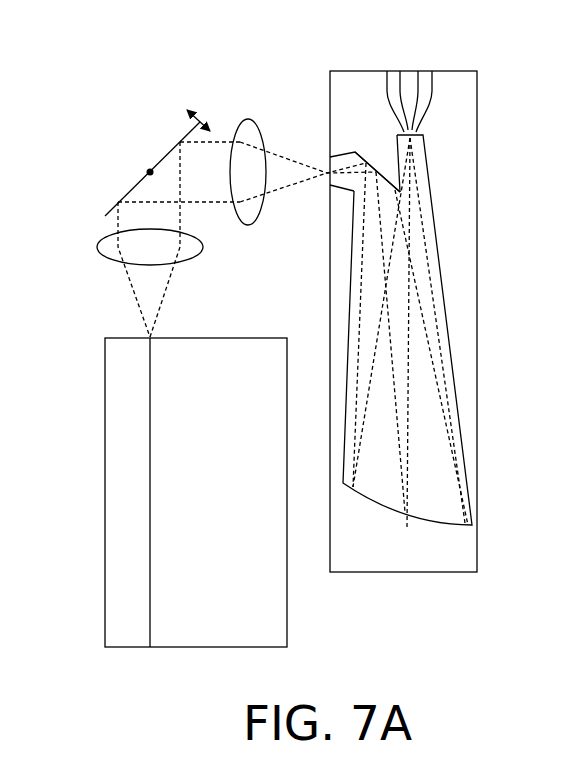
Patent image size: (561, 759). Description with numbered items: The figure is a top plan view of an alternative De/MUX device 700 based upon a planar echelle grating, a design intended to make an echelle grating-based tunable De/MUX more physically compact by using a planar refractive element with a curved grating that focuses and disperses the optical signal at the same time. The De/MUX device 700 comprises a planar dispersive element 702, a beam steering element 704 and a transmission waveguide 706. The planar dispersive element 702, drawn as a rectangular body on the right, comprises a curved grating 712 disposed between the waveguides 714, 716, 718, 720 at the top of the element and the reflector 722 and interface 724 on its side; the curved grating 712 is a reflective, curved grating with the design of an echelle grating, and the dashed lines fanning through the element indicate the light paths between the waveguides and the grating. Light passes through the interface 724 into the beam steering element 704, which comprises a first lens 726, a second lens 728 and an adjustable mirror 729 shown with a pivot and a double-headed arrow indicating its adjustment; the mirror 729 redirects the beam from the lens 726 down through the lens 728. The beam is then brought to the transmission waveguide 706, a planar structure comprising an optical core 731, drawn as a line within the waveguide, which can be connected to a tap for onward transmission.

The De/MUX device 700 is at (401, 616).
The planar dispersive element 702 is at (477, 450).
The beam steering element 704 is at (90, 147).
The transmission waveguide 706 is at (168, 648).
The curved grating 712 is at (407, 528).
The waveguide 714 is at (433, 89).
The waveguide 716 is at (418, 106).
The waveguide 718 is at (385, 92).
The waveguide 720 is at (387, 90).
The reflector 722 is at (373, 168).
The interface 724 is at (330, 181).
The lens 726 is at (240, 226).
The lens 728 is at (104, 264).
The adjustable mirror 729 is at (112, 207).
The optical core 731 is at (150, 503).